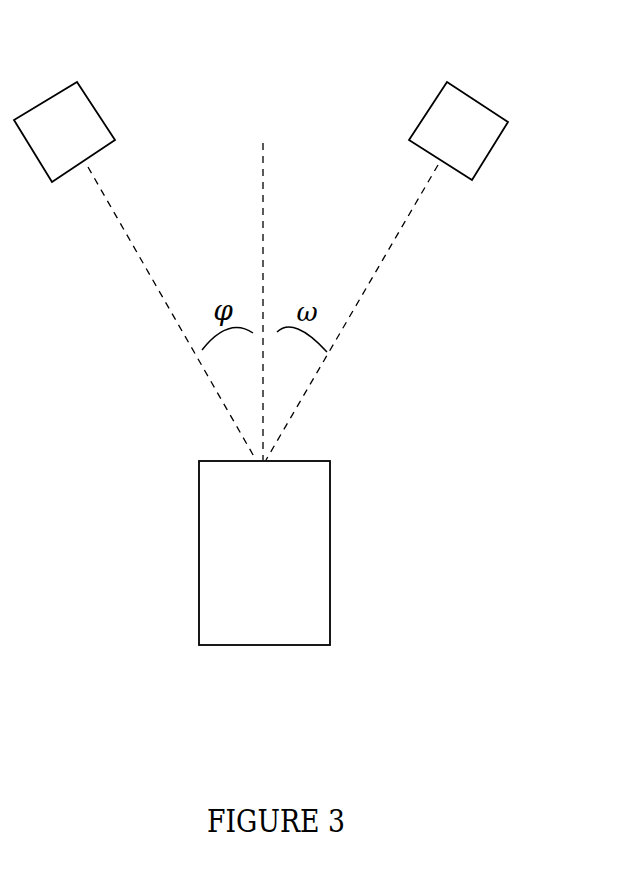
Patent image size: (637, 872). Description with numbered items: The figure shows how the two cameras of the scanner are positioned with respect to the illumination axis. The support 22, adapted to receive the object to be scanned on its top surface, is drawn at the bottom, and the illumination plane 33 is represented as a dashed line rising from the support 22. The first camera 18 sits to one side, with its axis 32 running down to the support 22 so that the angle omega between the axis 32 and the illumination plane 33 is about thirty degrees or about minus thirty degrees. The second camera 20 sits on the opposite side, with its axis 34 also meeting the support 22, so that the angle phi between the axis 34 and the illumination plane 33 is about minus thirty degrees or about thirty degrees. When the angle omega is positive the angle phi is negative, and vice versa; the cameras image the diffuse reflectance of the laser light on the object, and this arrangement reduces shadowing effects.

The first camera 18 is at (476, 129).
The second camera 20 is at (86, 113).
The support 22 is at (310, 553).
The axis of the first camera 32 is at (382, 275).
The illumination plane 33 is at (263, 168).
The axis of the second camera 34 is at (142, 260).